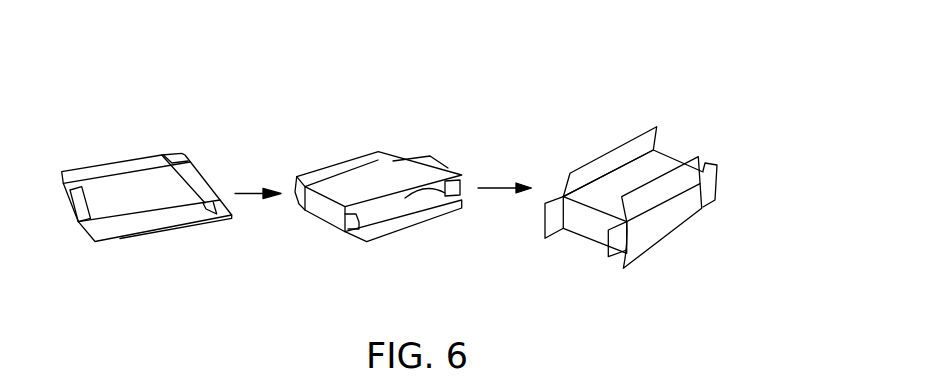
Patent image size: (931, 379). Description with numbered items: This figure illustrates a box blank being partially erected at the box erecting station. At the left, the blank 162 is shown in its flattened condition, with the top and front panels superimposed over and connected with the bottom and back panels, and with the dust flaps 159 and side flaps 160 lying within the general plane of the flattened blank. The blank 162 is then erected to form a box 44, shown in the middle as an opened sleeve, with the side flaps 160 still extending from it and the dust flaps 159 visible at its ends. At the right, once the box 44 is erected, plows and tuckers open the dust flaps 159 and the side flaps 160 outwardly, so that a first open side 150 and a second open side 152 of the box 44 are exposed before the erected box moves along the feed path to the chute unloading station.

The blank 162 is at (102, 162).
The side flaps 160 is at (335, 163).
The box 44 is at (400, 175).
The dust flaps 159 is at (344, 222).
The first open side 150 is at (563, 196).
The second open side 152 is at (675, 213).